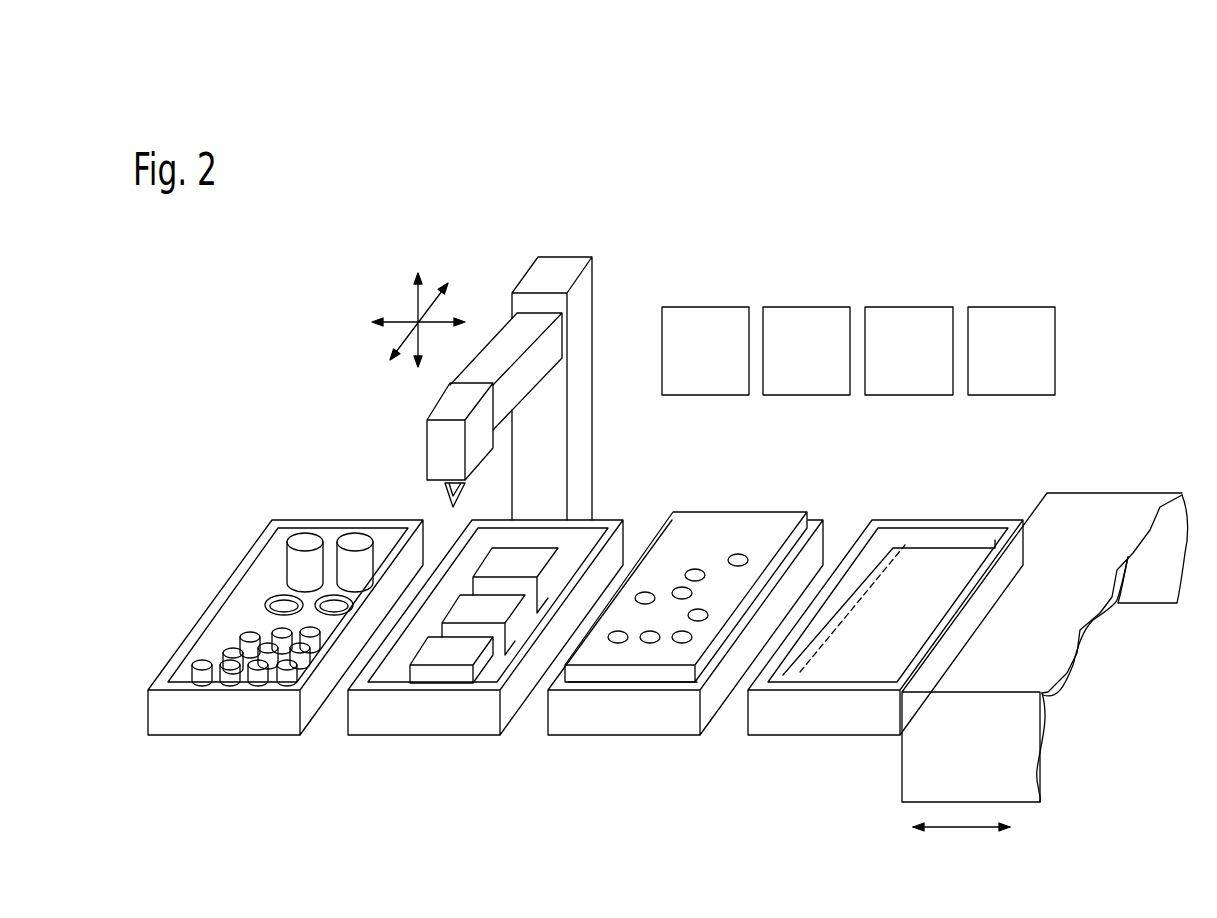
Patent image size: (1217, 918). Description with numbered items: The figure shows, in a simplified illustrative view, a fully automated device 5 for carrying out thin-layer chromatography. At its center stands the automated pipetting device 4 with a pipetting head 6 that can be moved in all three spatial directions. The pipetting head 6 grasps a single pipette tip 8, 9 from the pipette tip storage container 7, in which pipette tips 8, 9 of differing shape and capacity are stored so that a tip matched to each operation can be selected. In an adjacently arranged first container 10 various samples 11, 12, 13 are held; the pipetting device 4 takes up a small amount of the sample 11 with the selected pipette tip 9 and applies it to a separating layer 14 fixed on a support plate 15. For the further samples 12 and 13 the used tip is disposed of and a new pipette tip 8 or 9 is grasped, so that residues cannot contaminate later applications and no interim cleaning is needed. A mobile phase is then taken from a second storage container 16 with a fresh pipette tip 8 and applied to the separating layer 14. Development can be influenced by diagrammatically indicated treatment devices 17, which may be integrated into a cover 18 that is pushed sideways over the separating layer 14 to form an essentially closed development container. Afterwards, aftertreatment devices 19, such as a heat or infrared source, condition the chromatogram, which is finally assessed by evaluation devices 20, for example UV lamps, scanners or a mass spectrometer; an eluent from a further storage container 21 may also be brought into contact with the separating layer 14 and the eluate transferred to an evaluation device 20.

The automated pipetting device 4 is at (585, 252).
The fully automated device 5 is at (268, 302).
The pipetting head 6 is at (438, 437).
The pipette tip storage container 7 is at (183, 710).
The pipette tip 8 is at (305, 541).
The pipette tip 9 is at (447, 493).
The first container 10 is at (391, 710).
The sample 11 is at (442, 648).
The sample 12 is at (507, 680).
The sample 13 is at (517, 558).
The separating layer 14 is at (620, 657).
The support plate 15 is at (655, 710).
The second storage container 16 is at (775, 710).
The treatment devices 17 is at (706, 318).
The cover 18 is at (1115, 518).
The aftertreatment devices 19 is at (807, 318).
The evaluation devices 20 is at (909, 318).
The storage container 21 is at (1012, 318).